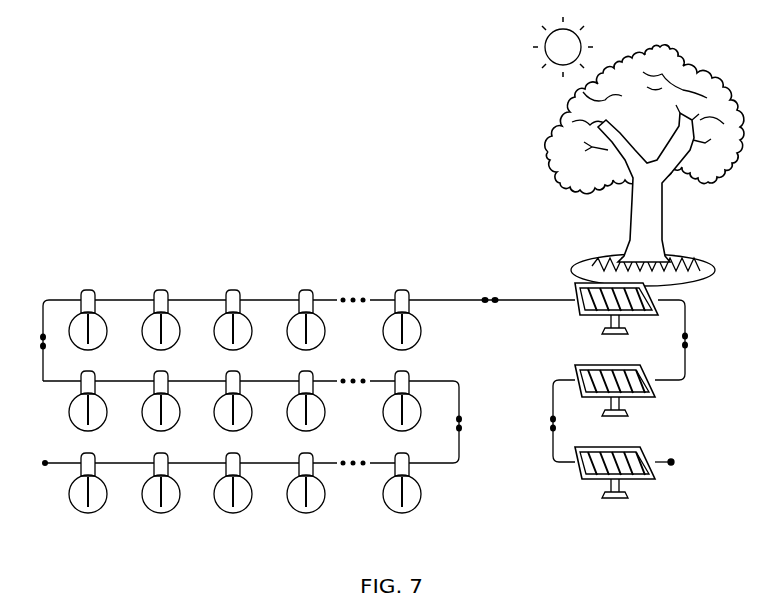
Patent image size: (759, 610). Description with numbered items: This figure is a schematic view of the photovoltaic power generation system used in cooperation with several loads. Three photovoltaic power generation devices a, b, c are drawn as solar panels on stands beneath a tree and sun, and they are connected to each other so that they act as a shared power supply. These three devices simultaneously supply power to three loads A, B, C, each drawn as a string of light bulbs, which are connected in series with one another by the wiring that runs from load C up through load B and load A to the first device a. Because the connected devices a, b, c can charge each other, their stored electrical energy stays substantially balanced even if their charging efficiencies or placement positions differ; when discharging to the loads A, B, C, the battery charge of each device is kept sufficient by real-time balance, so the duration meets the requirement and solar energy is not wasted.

The load A is at (56, 290).
The load B is at (50, 381).
The load C is at (220, 483).
The photovoltaic power generation device a is at (643, 308).
The photovoltaic power generation device b is at (643, 390).
The photovoltaic power generation device c is at (643, 472).